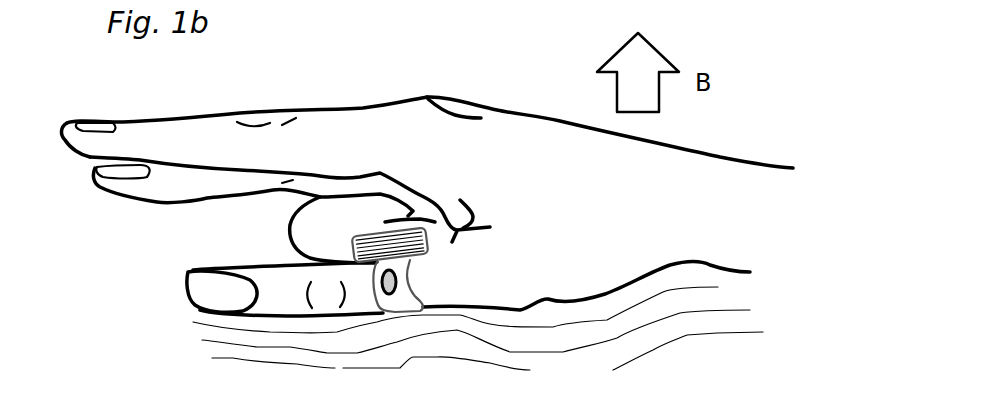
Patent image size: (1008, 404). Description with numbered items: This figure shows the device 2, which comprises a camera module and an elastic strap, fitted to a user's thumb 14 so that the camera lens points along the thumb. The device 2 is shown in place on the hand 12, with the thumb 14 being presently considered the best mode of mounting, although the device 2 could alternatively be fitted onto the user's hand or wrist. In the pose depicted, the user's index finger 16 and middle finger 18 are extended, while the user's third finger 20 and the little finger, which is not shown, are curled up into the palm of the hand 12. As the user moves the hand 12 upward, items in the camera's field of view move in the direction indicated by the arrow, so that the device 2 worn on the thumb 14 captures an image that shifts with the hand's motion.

The device 2 is at (408, 314).
The hand 12 is at (608, 203).
The thumb 14 is at (207, 288).
The index finger 16 is at (275, 169).
The middle finger 18 is at (152, 202).
The third finger 20 is at (292, 221).